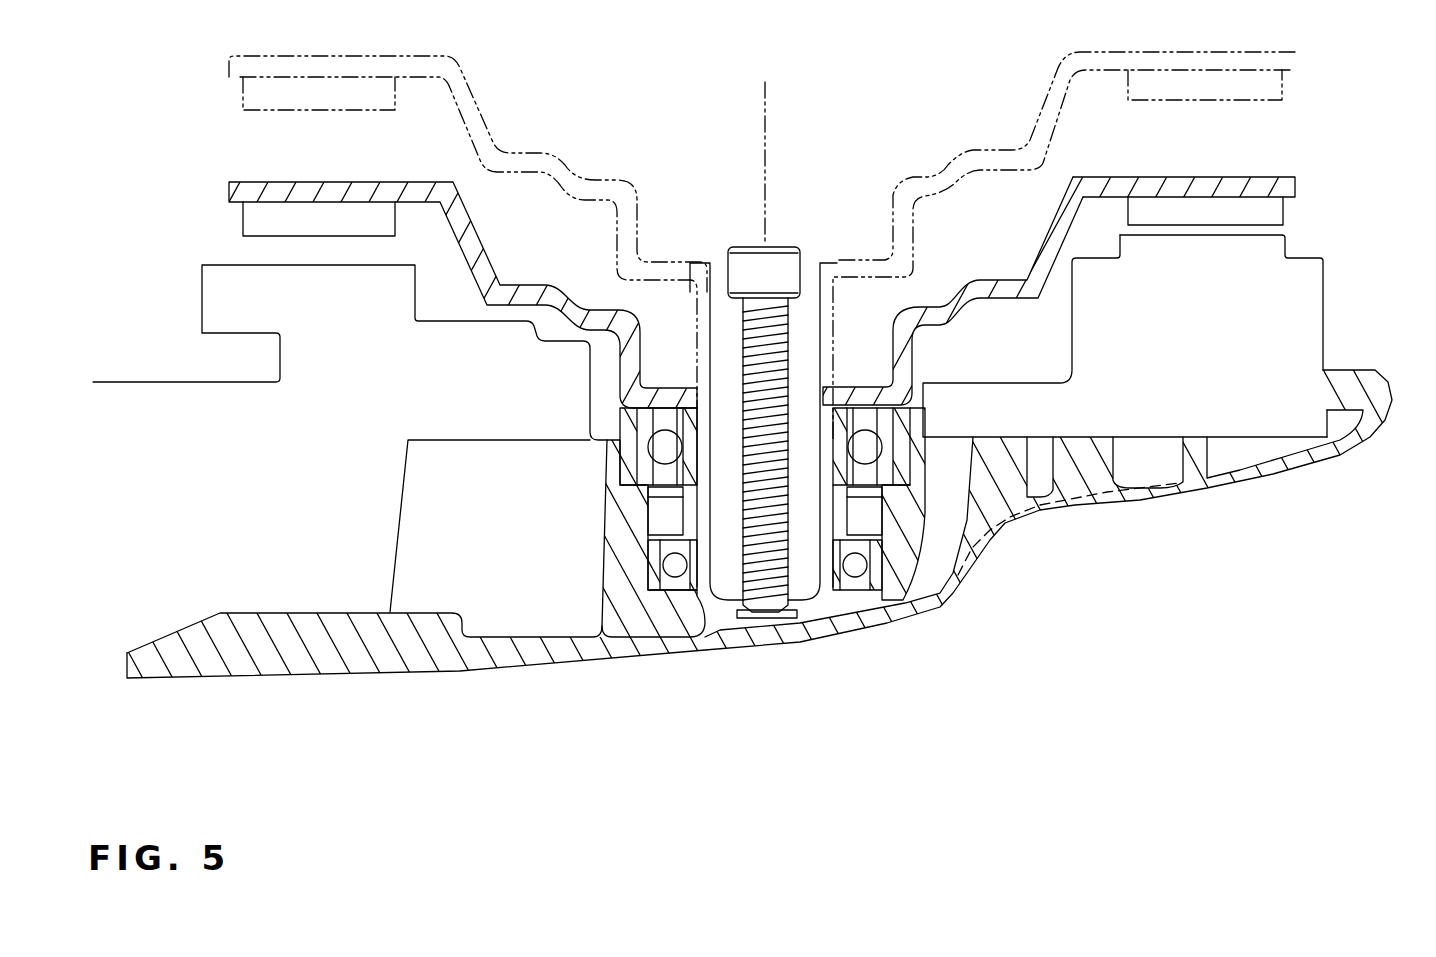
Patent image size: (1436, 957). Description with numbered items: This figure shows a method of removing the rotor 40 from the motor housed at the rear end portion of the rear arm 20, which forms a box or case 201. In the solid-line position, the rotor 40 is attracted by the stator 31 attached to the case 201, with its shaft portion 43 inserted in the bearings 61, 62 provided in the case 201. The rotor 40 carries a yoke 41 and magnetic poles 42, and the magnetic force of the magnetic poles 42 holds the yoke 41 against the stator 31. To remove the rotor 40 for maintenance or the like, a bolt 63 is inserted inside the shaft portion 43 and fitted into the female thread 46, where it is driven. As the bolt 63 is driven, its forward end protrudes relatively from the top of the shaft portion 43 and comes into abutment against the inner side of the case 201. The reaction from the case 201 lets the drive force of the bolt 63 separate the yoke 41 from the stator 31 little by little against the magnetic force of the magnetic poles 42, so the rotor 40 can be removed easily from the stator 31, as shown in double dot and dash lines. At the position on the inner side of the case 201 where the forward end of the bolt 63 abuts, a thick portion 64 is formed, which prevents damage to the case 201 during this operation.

The rear arm 20 is at (1265, 492).
The case 201 is at (1173, 511).
The stator 31 is at (1323, 303).
The rotor 40 is at (1293, 176).
The yoke 41 is at (1103, 176).
The magnetic poles 42 is at (1285, 206).
The shaft portion 43 is at (687, 634).
The female thread 46 is at (800, 616).
The bearing 61 is at (877, 602).
The bearing 62 is at (948, 602).
The bolt 63 is at (747, 245).
The thick portion 64 is at (722, 622).